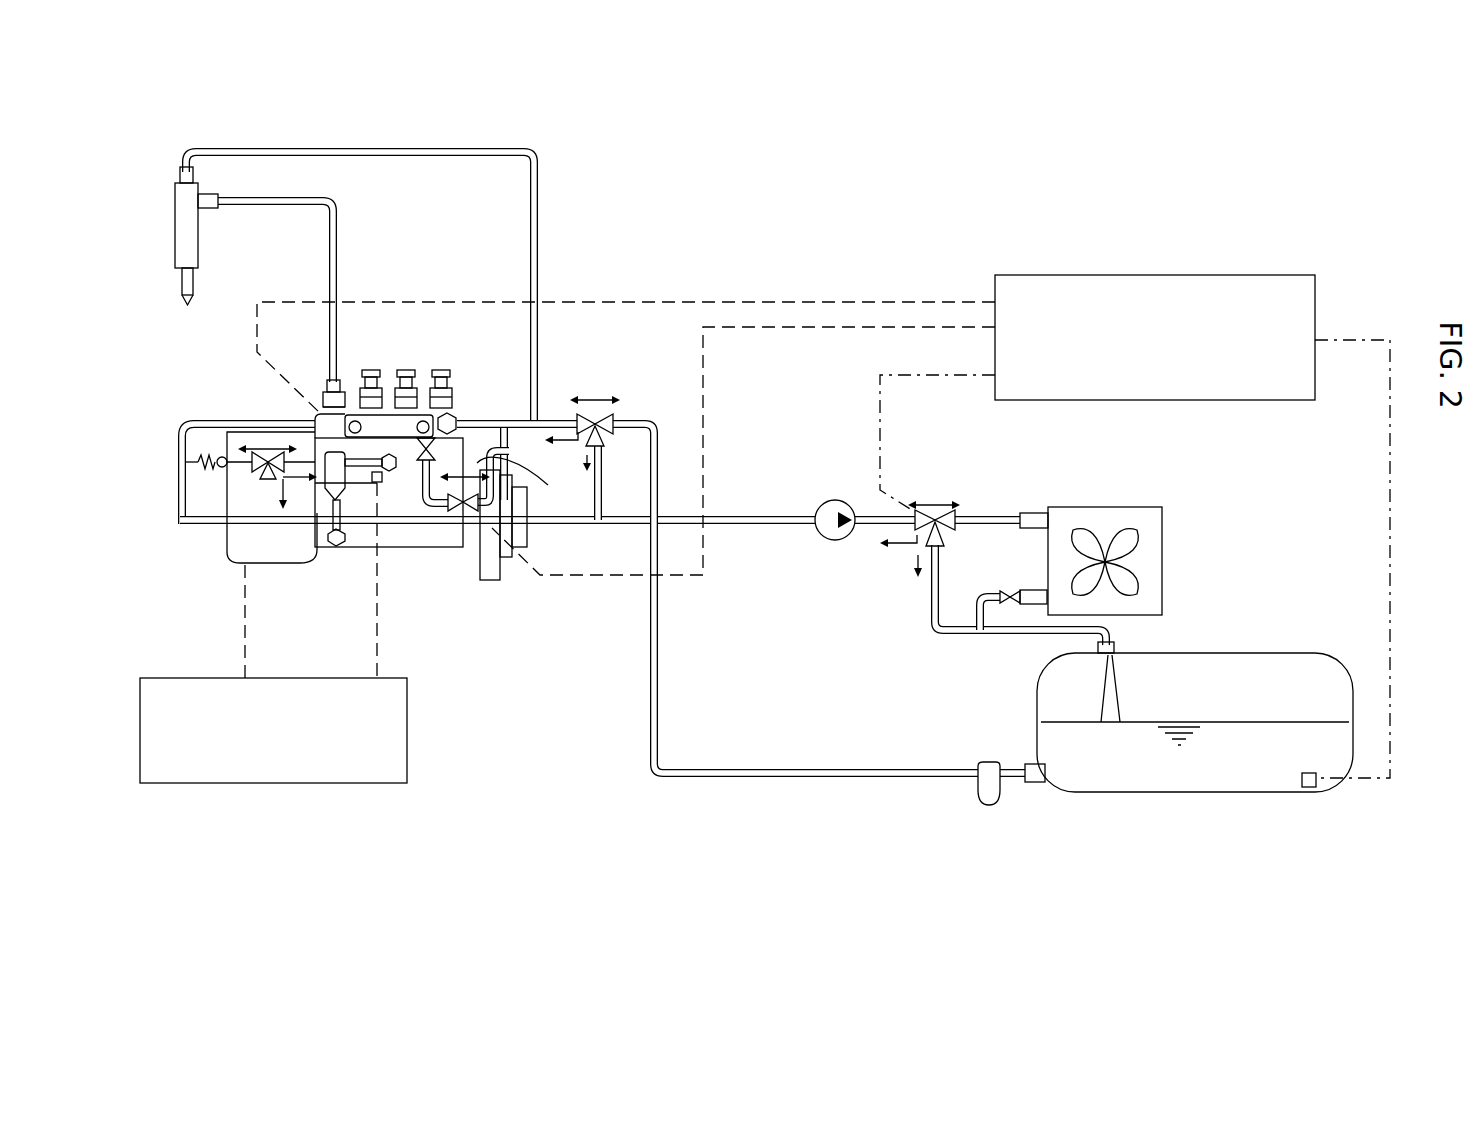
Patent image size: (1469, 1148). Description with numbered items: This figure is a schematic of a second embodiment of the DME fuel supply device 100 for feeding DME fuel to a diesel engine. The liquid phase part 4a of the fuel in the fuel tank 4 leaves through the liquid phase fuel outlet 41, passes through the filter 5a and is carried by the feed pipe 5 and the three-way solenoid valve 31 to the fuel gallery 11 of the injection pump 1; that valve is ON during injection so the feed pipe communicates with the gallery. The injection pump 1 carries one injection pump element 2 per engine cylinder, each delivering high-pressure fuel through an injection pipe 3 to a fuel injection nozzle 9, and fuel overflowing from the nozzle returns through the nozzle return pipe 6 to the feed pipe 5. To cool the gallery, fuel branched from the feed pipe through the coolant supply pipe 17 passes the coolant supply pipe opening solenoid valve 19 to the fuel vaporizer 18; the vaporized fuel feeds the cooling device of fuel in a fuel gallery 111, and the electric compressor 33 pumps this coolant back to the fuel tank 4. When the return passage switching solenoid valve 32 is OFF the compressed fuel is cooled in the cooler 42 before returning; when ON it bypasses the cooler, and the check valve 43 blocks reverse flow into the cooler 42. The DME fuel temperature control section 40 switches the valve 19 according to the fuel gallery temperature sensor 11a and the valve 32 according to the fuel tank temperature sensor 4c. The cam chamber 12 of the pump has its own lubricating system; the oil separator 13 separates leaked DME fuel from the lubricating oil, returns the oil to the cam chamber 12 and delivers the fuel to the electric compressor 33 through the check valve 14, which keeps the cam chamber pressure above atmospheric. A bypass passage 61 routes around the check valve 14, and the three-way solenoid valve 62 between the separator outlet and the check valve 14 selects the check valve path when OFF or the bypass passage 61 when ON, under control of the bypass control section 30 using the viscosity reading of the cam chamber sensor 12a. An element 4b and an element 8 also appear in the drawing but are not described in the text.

The injection pump 1 is at (360, 566).
The injection pump element 2 is at (327, 398).
The injection pipe 3 is at (283, 210).
The fuel tank 4 is at (1232, 652).
The liquid phase part 4a is at (1247, 768).
The tank upper portion (gas phase) 4b is at (1312, 672).
The fuel tank temperature sensor 4c is at (1310, 788).
The feed pipe 5 is at (885, 777).
The filter 5a is at (993, 805).
The nozzle return pipe 6 is at (433, 160).
The fuel feed pipe 8 is at (757, 517).
The fuel injection nozzle 9 is at (200, 248).
The fuel gallery 11 is at (460, 410).
The fuel gallery temperature sensor 11a is at (338, 413).
The cooling device of fuel in a fuel gallery 111 is at (388, 425).
The cam chamber 12 is at (430, 537).
The cam chamber sensor 12a is at (374, 484).
The oil separator 13 is at (325, 487).
The check valve 14 is at (215, 445).
The coolant supply pipe 17 is at (507, 443).
The fuel vaporizer 18 is at (420, 462).
The coolant supply pipe opening solenoid valve 19 is at (453, 553).
The bypass control section 30 is at (408, 725).
The three-way solenoid valve 31 is at (606, 420).
The return passage switching solenoid valve 32 is at (960, 515).
The electric compressor 33 is at (838, 500).
The DME fuel temperature control section 40 is at (1200, 275).
The liquid phase fuel outlet 41 is at (1038, 782).
The cooler 42 is at (1162, 535).
The check valve 43 is at (1005, 592).
The bypass passage 61 is at (262, 498).
The three-way solenoid valve 62 is at (258, 478).
The DME fuel supply device 100 is at (948, 221).